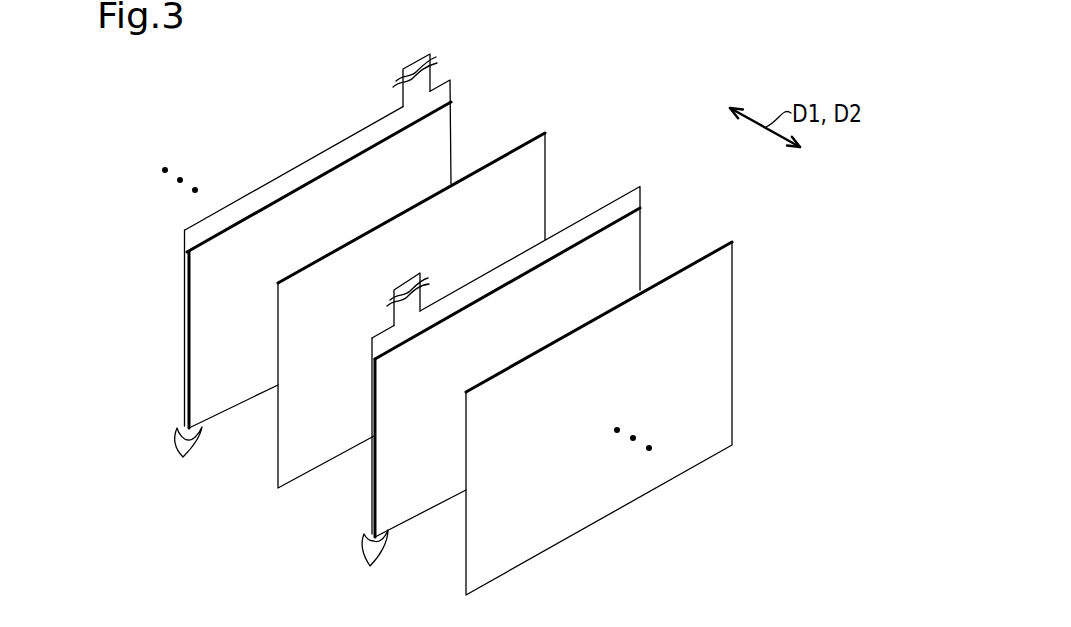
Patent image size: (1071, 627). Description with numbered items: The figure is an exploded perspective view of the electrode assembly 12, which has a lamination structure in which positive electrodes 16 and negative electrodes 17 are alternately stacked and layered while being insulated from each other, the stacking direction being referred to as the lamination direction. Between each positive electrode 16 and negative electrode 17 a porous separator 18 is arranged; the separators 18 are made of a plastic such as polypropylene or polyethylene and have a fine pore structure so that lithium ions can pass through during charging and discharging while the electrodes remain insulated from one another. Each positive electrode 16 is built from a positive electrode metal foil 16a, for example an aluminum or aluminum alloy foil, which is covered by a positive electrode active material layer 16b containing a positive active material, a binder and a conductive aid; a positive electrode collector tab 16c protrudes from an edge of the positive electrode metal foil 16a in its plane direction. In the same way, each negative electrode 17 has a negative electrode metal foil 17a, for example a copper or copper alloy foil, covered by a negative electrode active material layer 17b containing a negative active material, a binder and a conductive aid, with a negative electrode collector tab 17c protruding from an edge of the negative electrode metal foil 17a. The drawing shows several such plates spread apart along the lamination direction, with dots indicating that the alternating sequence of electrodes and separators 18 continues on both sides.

The electrode assembly 12 is at (663, 123).
The positive electrode 16 is at (643, 229).
The positive electrode metal foil 16a is at (372, 512).
The positive electrode active material layer 16b is at (370, 561).
The positive electrode collector tab 16c is at (410, 286).
The negative electrode 17 is at (455, 127).
The negative electrode metal foil 17a is at (184, 404).
The negative electrode active material layer 17b is at (183, 457).
The negative electrode collector tab 17c is at (404, 93).
The separator 18 is at (548, 159).